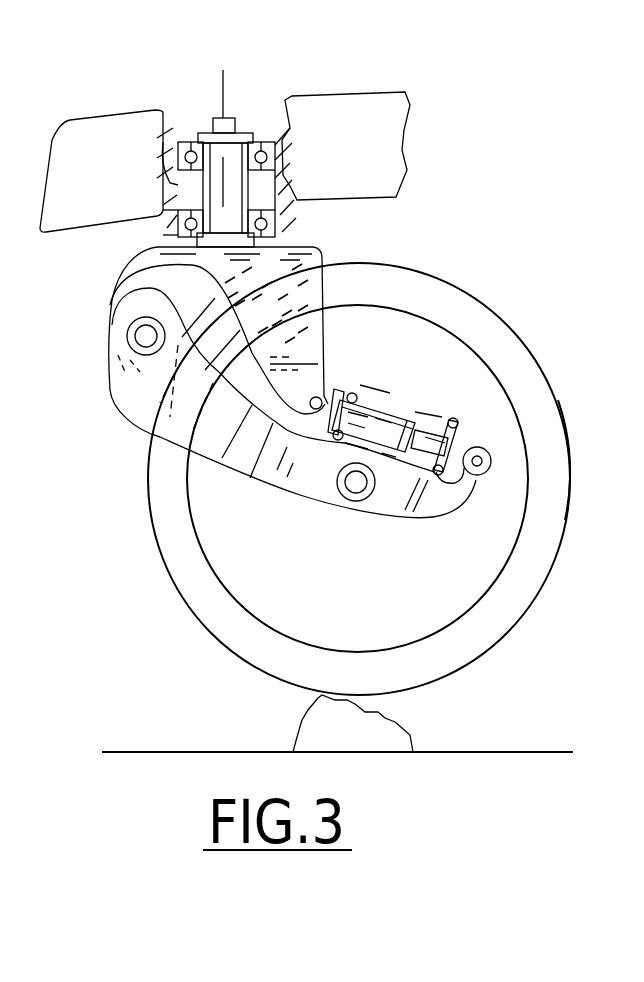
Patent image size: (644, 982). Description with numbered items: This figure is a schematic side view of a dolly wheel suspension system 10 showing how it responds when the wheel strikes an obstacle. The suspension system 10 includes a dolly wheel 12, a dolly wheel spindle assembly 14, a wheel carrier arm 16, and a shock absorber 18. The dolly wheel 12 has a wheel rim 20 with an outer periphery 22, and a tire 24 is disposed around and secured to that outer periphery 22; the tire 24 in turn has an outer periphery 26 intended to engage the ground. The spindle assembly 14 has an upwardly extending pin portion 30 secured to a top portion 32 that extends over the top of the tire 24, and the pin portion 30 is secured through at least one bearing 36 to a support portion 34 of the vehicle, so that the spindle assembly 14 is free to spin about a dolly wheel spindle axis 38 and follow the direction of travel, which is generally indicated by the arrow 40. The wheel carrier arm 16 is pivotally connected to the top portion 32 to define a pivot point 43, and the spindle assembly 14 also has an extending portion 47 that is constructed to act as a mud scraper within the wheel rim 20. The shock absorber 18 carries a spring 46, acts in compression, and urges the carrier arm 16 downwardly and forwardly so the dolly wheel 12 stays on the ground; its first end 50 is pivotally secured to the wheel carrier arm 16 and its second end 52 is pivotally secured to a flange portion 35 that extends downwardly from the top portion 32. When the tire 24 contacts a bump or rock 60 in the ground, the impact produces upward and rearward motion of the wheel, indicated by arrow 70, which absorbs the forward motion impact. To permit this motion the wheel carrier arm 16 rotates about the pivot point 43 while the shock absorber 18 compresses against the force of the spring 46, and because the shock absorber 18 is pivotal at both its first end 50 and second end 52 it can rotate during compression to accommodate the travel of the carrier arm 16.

The wheel suspension system 10 is at (328, 50).
The dolly wheel 12 is at (433, 283).
The dolly wheel spindle assembly 14 is at (316, 266).
The wheel carrier arm 16 is at (170, 417).
The shock absorber 18 is at (375, 406).
The wheel rim 20 is at (358, 599).
The outer periphery 22 is at (473, 350).
The tire 24 is at (543, 403).
The outer periphery 26 is at (570, 453).
The pin portion 30 is at (164, 142).
The top portion 32 is at (288, 252).
The support portion 34 is at (373, 100).
The flange portion 35 is at (305, 340).
The bearing 36 is at (273, 200).
The dolly wheel spindle axis 38 is at (223, 87).
The arrow 40 is at (542, 703).
The pivot point 43 is at (135, 337).
The spring 46 is at (427, 508).
The extending portion 47 is at (338, 368).
The first end 50 is at (484, 474).
The second end 52 is at (308, 412).
The rock 60 is at (388, 727).
The arrow 70 is at (160, 607).